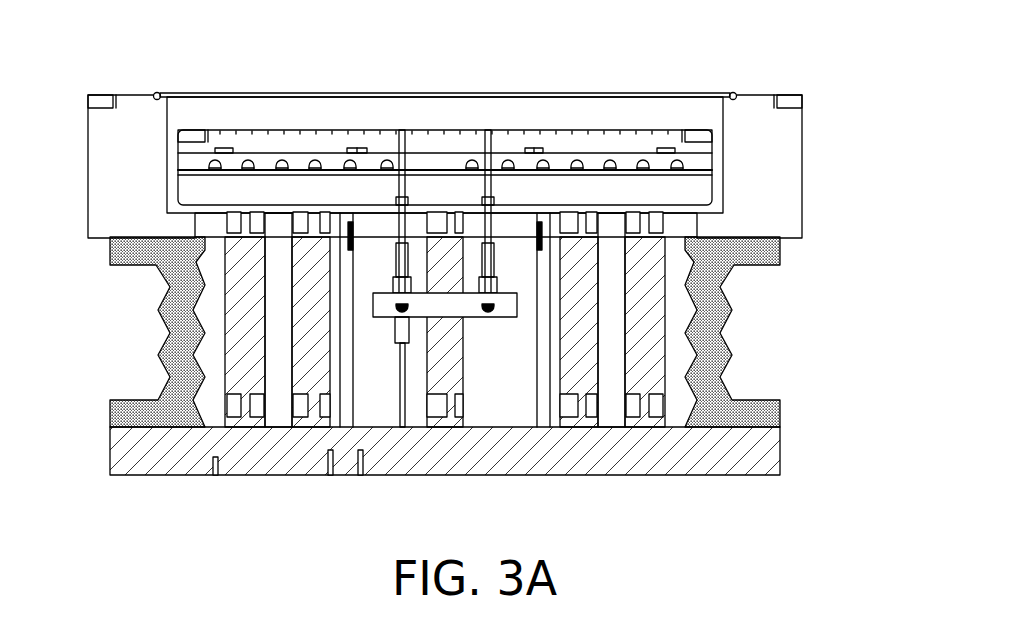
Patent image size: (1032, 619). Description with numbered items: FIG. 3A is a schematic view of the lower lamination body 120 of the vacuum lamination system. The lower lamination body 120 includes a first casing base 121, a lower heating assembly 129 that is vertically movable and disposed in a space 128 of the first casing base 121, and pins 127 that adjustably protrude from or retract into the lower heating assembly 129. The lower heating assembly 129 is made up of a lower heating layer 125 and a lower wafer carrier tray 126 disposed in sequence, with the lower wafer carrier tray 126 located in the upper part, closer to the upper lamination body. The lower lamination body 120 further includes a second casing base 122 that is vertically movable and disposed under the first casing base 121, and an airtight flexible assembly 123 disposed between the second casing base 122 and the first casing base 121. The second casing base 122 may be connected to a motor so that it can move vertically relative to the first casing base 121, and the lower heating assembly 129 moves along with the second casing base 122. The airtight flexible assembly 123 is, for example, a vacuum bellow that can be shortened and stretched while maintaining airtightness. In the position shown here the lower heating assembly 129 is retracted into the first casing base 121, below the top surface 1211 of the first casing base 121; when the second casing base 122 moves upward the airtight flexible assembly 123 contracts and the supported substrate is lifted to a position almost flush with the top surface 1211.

The lower lamination body 120 is at (768, 59).
The first casing base 121 is at (112, 165).
The top surface 1211 is at (132, 84).
The second casing base 122 is at (758, 453).
The airtight flexible assembly 123 is at (727, 365).
The lower heating layer 125 is at (695, 160).
The lower wafer carrier tray 126 is at (693, 147).
The pins 127 is at (492, 258).
The space 128 is at (246, 108).
The lower heating assembly 129 is at (875, 112).